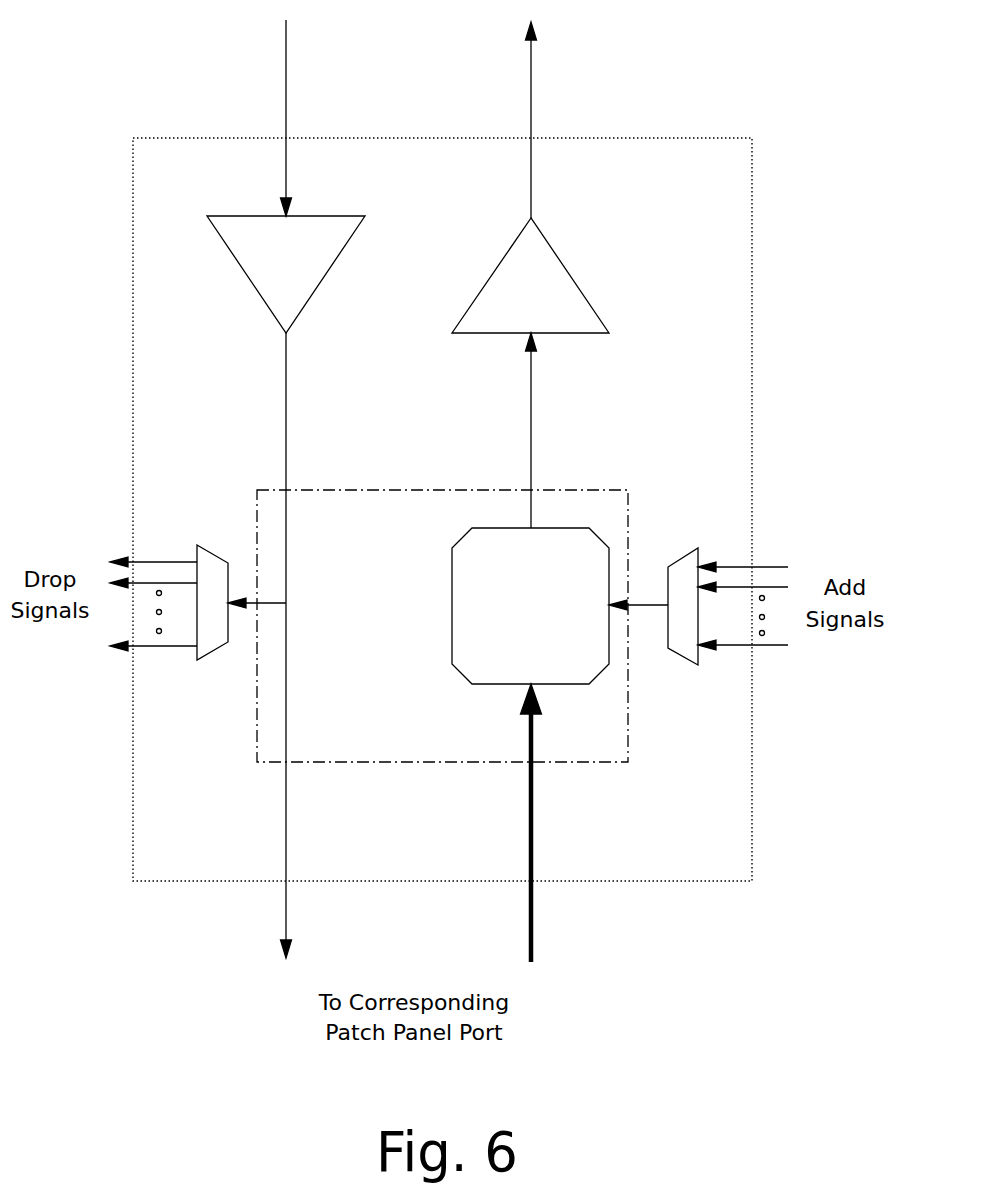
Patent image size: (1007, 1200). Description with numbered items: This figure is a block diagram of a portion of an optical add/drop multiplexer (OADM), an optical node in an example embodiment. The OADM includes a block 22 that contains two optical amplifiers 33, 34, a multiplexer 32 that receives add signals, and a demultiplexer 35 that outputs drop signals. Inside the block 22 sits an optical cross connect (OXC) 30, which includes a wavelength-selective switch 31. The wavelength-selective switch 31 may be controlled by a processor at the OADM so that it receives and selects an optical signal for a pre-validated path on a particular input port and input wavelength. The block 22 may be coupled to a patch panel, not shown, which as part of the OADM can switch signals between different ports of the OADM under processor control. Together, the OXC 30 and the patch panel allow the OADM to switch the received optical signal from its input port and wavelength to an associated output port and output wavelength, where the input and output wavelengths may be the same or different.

The block 22 is at (689, 138).
The optical cross connect (OXC) 30 is at (590, 763).
The wavelength-selective switch 31 is at (482, 686).
The multiplexer 32 is at (690, 548).
The optical amplifier 33 is at (560, 260).
The optical amplifier 34 is at (235, 262).
The demultiplexer 35 is at (228, 561).